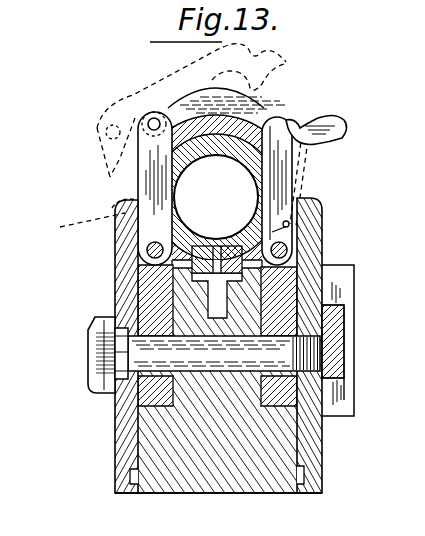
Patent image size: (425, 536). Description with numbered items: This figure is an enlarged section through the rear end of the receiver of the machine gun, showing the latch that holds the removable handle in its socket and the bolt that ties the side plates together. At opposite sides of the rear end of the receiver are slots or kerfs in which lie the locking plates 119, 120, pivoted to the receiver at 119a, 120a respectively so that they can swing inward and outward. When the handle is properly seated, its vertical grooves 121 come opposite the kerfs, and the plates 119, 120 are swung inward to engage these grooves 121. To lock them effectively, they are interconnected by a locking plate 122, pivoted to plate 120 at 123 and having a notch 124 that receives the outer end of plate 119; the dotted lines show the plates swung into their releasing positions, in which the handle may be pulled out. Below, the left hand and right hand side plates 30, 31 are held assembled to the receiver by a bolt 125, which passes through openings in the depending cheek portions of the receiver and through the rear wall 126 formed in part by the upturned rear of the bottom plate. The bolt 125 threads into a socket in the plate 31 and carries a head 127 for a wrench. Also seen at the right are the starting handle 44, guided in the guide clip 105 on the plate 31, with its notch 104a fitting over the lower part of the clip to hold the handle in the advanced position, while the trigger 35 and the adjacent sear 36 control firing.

The left hand side plate 30 is at (119, 424).
The right hand side plate 31 is at (321, 434).
The trigger 35 is at (323, 260).
The sear 36 is at (118, 266).
The starting handle 44 is at (341, 321).
The notch 104a is at (345, 374).
The guide clip 105 is at (352, 334).
The locking plate 119 is at (279, 177).
The pivot 119a is at (324, 237).
The locking plate 120 is at (141, 153).
The pivot 120a is at (147, 250).
The vertical grooves 121 is at (339, 227).
The locking plate 122 is at (252, 103).
The pivot 123 is at (153, 122).
The notch 124 is at (284, 118).
The bolt 125 is at (150, 400).
The rear wall 126 is at (172, 434).
The head 127 is at (92, 352).